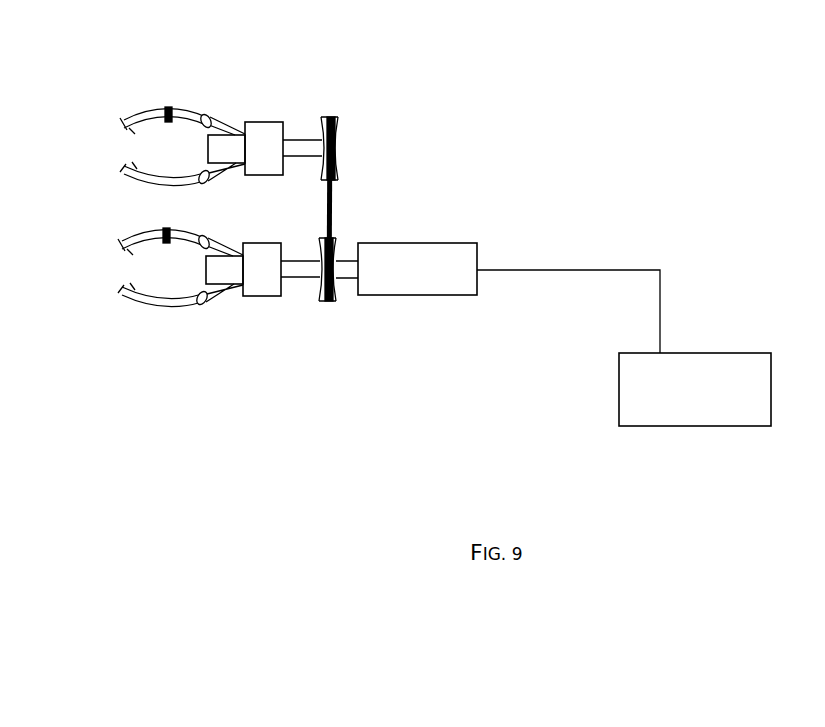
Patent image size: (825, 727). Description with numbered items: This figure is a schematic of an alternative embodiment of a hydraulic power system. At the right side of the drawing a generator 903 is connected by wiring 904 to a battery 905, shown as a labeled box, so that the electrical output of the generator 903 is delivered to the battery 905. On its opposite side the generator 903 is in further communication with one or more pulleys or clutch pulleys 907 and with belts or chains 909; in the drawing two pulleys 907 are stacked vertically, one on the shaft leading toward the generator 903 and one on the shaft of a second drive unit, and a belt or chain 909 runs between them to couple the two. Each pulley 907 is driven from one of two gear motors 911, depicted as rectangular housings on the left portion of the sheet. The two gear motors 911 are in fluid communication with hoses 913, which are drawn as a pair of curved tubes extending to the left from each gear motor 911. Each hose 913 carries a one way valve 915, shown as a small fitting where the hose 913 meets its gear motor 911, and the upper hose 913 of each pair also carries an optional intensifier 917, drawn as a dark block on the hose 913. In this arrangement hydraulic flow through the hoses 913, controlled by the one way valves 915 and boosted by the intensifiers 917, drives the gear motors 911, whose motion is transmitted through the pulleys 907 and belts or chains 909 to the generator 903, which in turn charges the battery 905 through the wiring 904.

The generator 903 is at (421, 296).
The wiring 904 is at (580, 268).
The battery 905 is at (619, 394).
The pulley/clutch pulley 907 is at (338, 153).
The belt/chain 909 is at (325, 212).
The gear motor 911 is at (267, 121).
The hose 913 is at (137, 182).
The one way valve 915 is at (209, 115).
The intensifier 917 is at (168, 107).